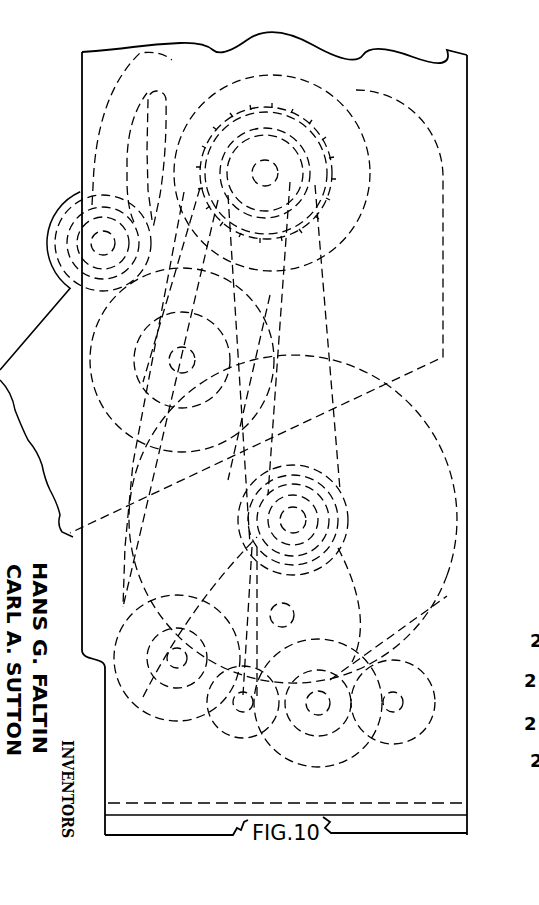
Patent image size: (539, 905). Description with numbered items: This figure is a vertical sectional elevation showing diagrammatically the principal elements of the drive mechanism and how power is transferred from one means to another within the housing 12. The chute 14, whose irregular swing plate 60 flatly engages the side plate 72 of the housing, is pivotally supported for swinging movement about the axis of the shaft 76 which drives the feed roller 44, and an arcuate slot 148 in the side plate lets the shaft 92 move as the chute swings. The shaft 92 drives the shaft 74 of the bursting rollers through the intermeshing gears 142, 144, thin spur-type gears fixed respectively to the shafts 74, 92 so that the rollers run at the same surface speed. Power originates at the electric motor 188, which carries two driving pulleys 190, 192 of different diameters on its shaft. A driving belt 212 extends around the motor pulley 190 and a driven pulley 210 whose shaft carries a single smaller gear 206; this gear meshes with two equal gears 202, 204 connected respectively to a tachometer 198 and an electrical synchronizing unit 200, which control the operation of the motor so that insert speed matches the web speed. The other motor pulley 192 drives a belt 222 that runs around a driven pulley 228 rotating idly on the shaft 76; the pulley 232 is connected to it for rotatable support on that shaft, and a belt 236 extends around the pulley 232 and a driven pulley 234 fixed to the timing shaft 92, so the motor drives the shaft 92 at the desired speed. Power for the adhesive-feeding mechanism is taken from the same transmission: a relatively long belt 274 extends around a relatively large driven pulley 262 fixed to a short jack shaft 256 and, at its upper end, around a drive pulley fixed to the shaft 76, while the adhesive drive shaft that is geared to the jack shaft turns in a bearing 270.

The housing 12 is at (470, 300).
The chute 14 is at (43, 320).
The feed roller 44 is at (310, 123).
The swing plate 60 is at (437, 135).
The side plate 72 is at (445, 593).
The shaft 74 is at (100, 243).
The shaft 76 is at (266, 169).
The shaft 92 is at (175, 368).
The gear 142 is at (60, 227).
The gear 144 is at (90, 357).
The arcuate slot 148 is at (127, 150).
The electric motor 188 is at (430, 430).
The driving pulley 190 is at (303, 515).
The driving pulley 192 is at (333, 470).
The tachometer 198 is at (243, 707).
The electrical synchronizing unit 200 is at (390, 697).
The gear 202 is at (237, 737).
The gear 204 is at (430, 723).
The gear 206 is at (337, 730).
The driven pulley 210 is at (313, 767).
The driving belt 212 is at (370, 648).
The belt 222 is at (323, 317).
The driven pulley 228 is at (290, 223).
The pulley 232 is at (280, 462).
The driven pulley 234 is at (137, 368).
The belt 236 is at (267, 283).
The jack shaft 256 is at (177, 667).
The driven pulley 262 is at (150, 597).
The bearing 270 is at (290, 610).
The belt 274 is at (310, 183).